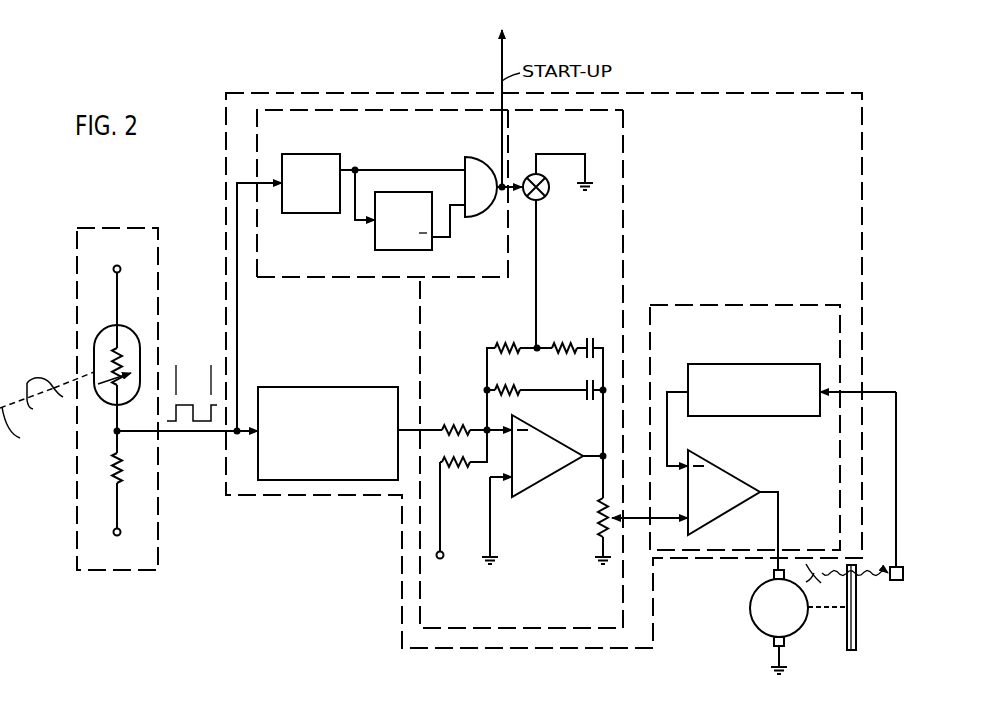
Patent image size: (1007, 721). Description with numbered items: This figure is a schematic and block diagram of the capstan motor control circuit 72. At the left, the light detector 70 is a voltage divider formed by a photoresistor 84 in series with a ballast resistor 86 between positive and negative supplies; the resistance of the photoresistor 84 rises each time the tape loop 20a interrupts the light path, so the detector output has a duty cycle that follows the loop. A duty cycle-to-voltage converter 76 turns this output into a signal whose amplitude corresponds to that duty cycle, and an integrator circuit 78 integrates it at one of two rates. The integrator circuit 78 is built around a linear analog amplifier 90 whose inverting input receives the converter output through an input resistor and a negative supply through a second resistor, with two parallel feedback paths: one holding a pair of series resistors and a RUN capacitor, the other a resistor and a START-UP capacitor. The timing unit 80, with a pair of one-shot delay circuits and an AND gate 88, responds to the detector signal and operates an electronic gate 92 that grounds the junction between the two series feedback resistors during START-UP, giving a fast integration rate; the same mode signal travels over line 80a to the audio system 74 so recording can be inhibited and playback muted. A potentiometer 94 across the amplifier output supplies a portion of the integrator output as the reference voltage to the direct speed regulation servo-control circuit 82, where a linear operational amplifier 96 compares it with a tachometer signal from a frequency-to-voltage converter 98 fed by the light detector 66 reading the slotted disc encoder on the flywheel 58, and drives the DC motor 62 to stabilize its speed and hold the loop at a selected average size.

The tape loop 20a is at (27, 383).
The flywheel 58 is at (856, 636).
The DC motor 62 is at (755, 622).
The light detector 66 is at (903, 580).
The light detector 70 is at (158, 522).
The motor control circuit 72 is at (544, 370).
The audio system 74 is at (498, 20).
The duty cycle-to-voltage converter 76 is at (317, 386).
The integrator circuit 78 is at (510, 369).
The timing unit 80 is at (430, 270).
The line 80a is at (502, 50).
The direct speed regulation servo-control circuit 82 is at (773, 436).
The photoresistor 84 is at (134, 331).
The ballast resistor 86 is at (110, 466).
The AND gate 88 is at (483, 172).
The linear analog amplifier 90 is at (556, 466).
The electronic gate 92 is at (547, 198).
The potentiometer 94 is at (597, 511).
The linear operational amplifier 96 is at (734, 504).
The frequency-to-voltage converter 98 is at (750, 416).